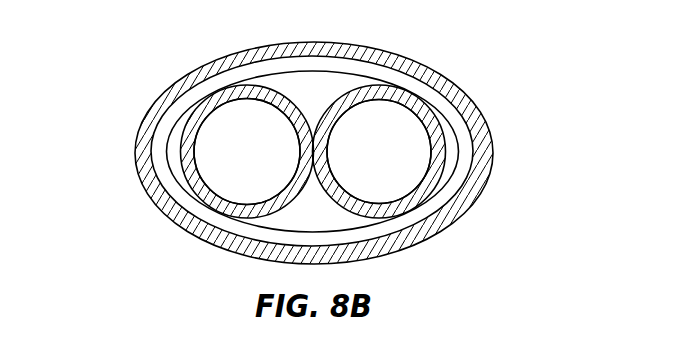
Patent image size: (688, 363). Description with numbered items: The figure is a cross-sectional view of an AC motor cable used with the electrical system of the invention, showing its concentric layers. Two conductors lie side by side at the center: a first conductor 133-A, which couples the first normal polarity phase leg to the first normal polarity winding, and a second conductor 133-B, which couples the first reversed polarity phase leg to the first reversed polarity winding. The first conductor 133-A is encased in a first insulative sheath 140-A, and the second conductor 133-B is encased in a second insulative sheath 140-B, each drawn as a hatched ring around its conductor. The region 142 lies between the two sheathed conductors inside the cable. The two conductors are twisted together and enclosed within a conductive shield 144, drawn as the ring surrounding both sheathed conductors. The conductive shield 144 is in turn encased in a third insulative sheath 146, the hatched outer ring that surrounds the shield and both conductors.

The first conductor 133-A is at (237, 122).
The second conductor 133-B is at (387, 120).
The first insulative sheath 140-A is at (190, 140).
The second insulative sheath 140-B is at (442, 141).
The web between lumens 142 is at (333, 98).
The conductive shield 144 is at (170, 180).
The third insulative sheath 146 is at (155, 196).